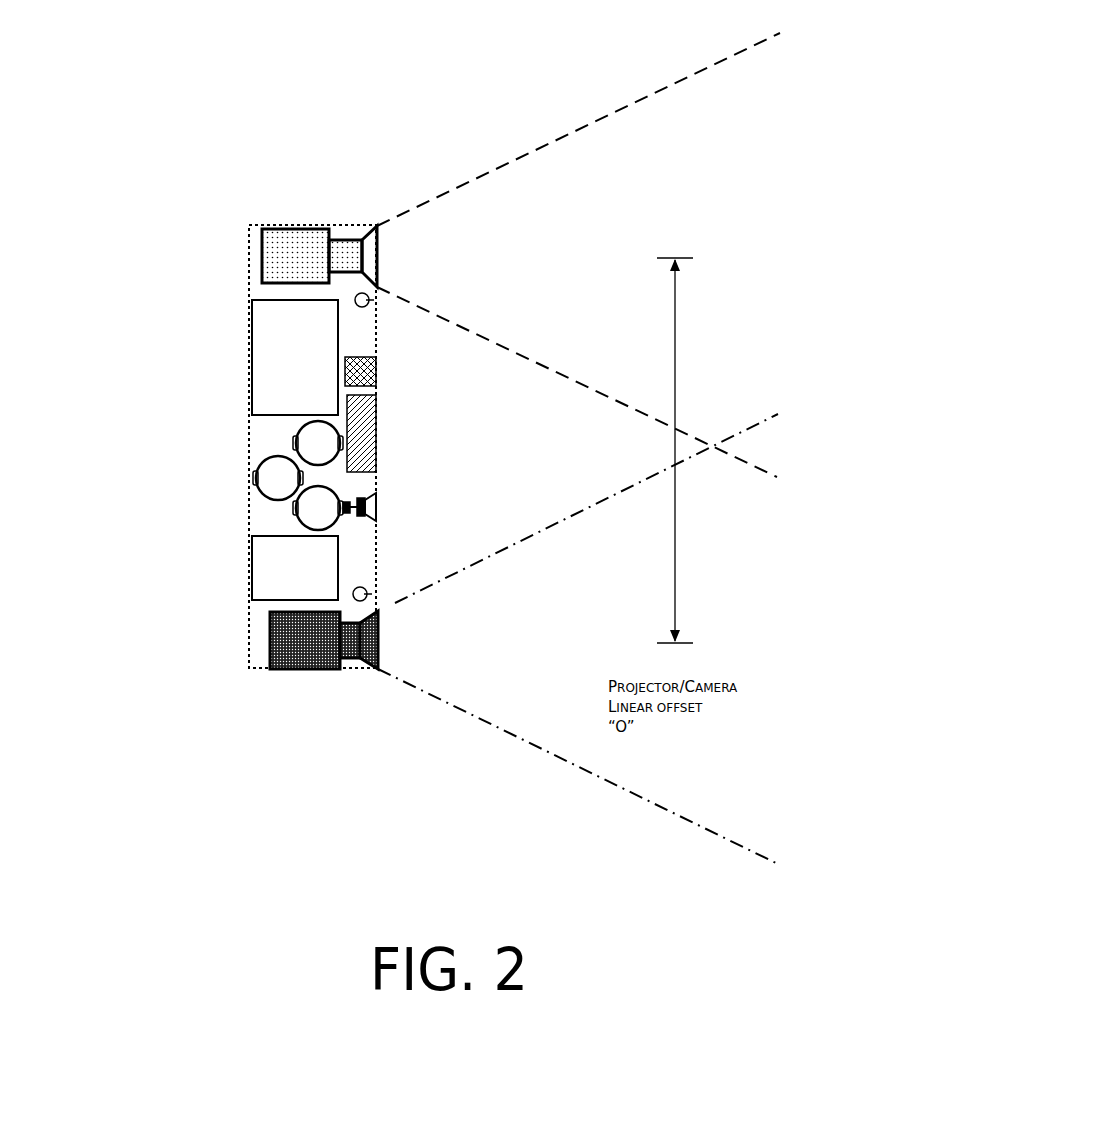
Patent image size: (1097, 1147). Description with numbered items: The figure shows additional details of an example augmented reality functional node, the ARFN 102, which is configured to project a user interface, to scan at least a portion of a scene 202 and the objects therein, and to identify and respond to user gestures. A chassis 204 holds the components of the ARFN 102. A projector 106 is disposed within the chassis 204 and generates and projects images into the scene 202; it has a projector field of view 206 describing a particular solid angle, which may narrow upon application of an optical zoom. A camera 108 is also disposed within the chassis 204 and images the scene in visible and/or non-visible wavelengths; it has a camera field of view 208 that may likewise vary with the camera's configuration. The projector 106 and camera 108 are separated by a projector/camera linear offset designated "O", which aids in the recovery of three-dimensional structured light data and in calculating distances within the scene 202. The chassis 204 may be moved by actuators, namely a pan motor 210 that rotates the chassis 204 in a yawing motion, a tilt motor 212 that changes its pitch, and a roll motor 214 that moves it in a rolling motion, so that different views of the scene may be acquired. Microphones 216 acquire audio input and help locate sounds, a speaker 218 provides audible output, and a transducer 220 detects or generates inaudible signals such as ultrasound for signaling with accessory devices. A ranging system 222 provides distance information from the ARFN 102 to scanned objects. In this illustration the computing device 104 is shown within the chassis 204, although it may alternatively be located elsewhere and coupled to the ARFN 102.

The augmented reality functional node (ARFN) 102 is at (249, 354).
The computing device 104 is at (295, 360).
The projector 106 is at (297, 257).
The camera 108 is at (305, 641).
The scene 202 is at (603, 445).
The chassis 204 is at (313, 224).
The projector field of view 206 is at (581, 128).
The camera field of view 208 is at (532, 745).
The pan motor 210 is at (296, 443).
The tilt motor 212 is at (258, 488).
The roll motor 214 is at (296, 508).
The microphone 216 is at (373, 290).
The speaker 218 is at (373, 505).
The transducer 220 is at (360, 370).
The ranging system 222 is at (366, 432).